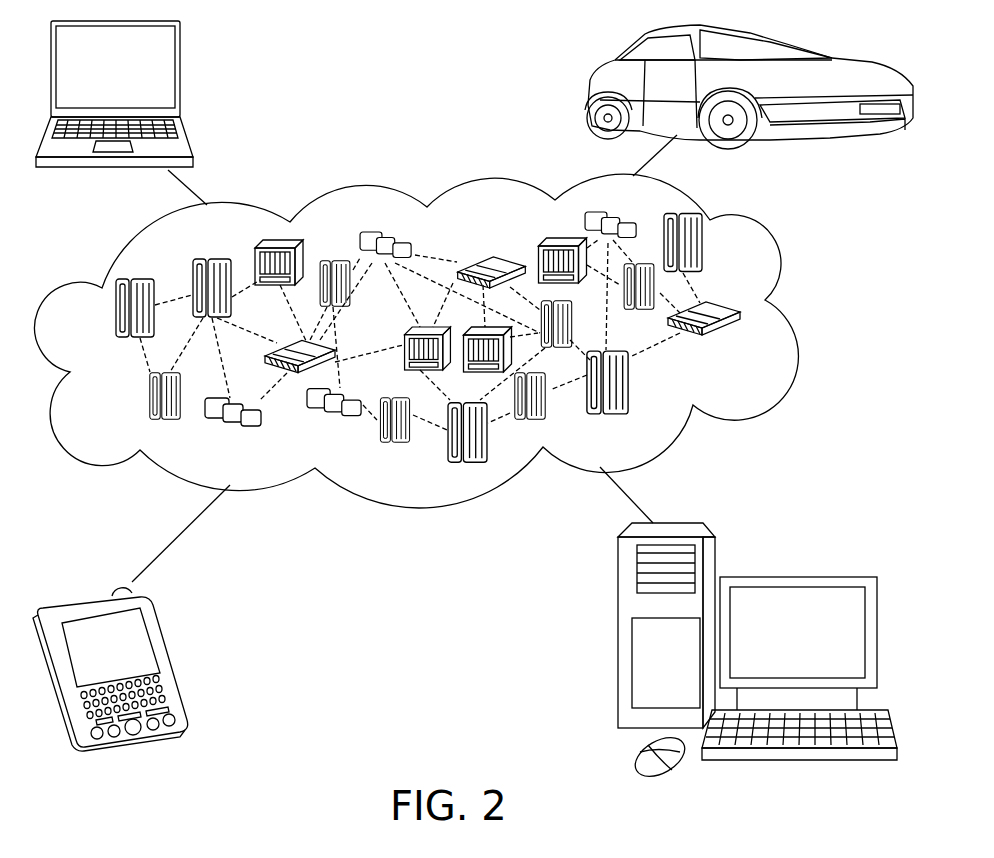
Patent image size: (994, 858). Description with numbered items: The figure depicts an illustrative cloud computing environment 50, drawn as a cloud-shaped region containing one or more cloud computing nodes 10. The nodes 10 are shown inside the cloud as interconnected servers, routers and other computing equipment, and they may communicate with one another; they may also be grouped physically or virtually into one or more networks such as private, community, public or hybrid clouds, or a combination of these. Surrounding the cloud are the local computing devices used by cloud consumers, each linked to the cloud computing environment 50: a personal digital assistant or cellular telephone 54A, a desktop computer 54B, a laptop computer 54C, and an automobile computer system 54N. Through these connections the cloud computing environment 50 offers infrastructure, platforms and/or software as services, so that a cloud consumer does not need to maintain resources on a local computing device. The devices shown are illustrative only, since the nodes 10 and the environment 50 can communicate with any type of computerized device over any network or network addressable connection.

The cloud computing node 10 is at (746, 346).
The cloud computing environment 50 is at (788, 308).
The personal digital assistant or cellular telephone 54A is at (165, 665).
The desktop computer 54B is at (795, 573).
The laptop computer 54C is at (180, 73).
The automobile computer system 54N is at (590, 93).